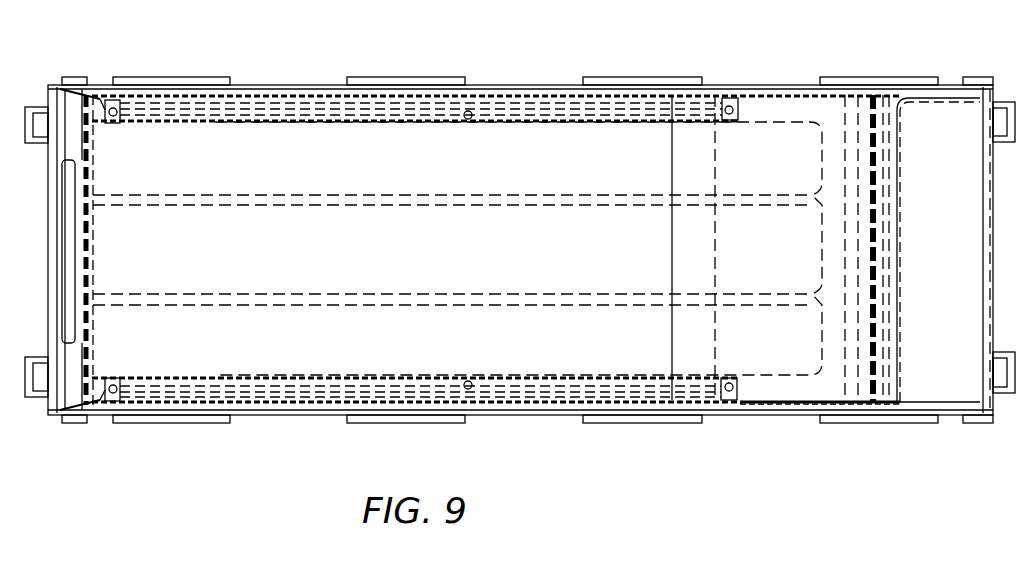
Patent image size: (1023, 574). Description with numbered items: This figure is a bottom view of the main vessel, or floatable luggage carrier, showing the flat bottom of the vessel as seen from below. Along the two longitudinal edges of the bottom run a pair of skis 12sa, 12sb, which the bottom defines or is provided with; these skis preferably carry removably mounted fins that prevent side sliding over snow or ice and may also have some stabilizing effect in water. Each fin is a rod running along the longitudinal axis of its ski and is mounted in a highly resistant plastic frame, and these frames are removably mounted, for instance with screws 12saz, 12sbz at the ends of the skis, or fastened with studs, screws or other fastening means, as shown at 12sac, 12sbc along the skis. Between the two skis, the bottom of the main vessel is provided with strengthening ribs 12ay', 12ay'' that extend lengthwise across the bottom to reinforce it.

The ski 12sb is at (416, 135).
The fastening means 12sbc is at (421, 147).
The screw 12sbz is at (465, 104).
The ski 12sa is at (412, 392).
The fastening means 12sac is at (420, 356).
The screw 12saz is at (465, 390).
The strengthening rib 12ay' is at (452, 227).
The strengthening rib 12ay'' is at (452, 280).